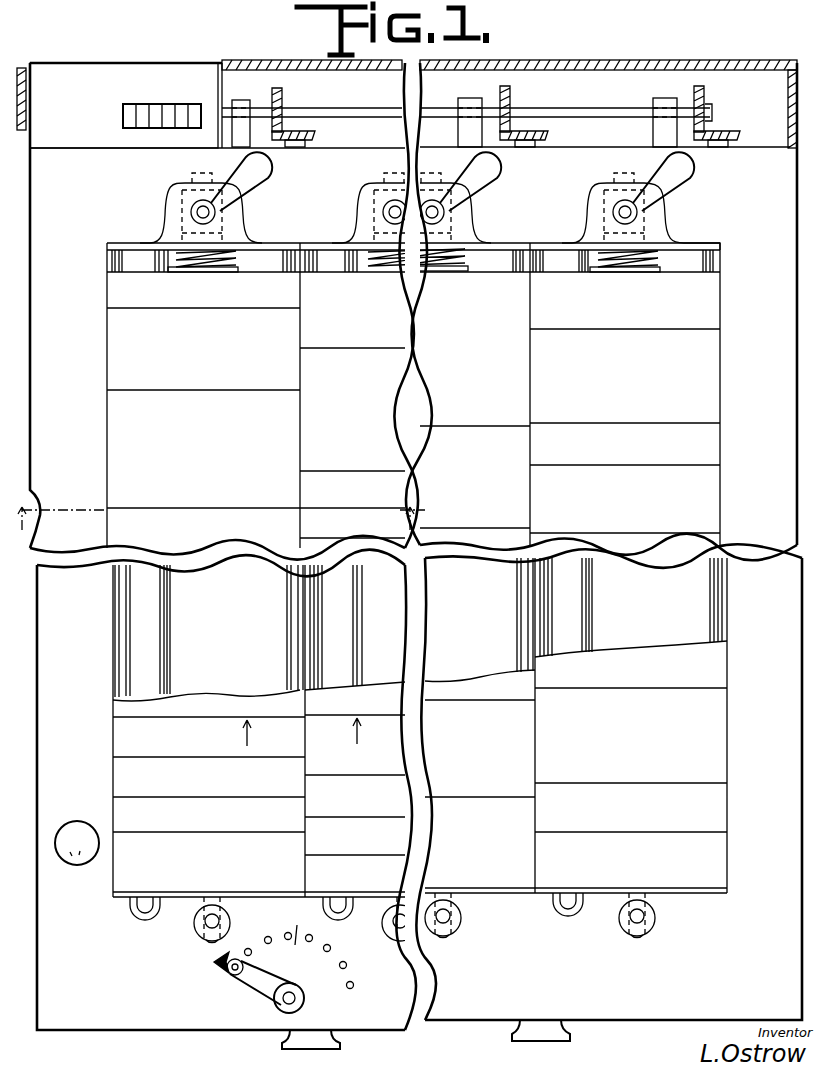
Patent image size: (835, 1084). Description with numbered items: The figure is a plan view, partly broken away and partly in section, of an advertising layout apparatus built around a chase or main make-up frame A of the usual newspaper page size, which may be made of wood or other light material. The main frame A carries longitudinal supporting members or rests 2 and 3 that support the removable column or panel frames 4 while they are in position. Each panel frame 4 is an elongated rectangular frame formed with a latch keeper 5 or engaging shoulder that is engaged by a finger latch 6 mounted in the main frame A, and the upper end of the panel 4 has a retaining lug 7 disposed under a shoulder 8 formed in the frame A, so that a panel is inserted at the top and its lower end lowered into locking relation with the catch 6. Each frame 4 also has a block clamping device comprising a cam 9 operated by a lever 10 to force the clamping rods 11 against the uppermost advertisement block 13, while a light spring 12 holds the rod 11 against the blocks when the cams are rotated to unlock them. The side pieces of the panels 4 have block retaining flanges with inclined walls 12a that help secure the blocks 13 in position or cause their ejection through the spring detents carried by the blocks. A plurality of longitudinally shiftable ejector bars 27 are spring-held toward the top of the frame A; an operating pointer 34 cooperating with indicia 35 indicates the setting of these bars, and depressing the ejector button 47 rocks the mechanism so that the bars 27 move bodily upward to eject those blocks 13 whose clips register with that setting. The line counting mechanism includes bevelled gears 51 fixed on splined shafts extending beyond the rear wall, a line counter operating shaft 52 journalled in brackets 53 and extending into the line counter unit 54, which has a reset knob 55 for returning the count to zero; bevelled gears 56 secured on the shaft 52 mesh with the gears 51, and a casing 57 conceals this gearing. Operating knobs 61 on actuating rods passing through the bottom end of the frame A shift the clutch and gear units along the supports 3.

The longitudinal supporting member 2 is at (130, 265).
The longitudinal supporting member 3 is at (226, 515).
The column panel frame 4 is at (287, 604).
The latch keeper 5 is at (212, 896).
The finger latch 6 is at (199, 920).
The retaining lug 7 is at (194, 176).
The shoulder 8 is at (300, 733).
The cam 9 is at (222, 212).
The lever 10 is at (260, 173).
The clamping rod 11 is at (212, 273).
The light spring 12 is at (232, 265).
The inclined wall 12a is at (313, 250).
The advertisement block 13 is at (298, 410).
The ejector bar 27 is at (157, 275).
The operating pointer 34 is at (258, 995).
The indicia 35 is at (300, 949).
The ejector button 47 is at (63, 862).
The bevelled gear 51 is at (312, 137).
The line counter operating shaft 52 is at (369, 110).
The bracket 53 is at (240, 100).
The line counter unit 54 is at (181, 103).
The reset knob 55 is at (20, 68).
The bevelled gear 56 is at (278, 88).
The casing 57 is at (603, 60).
The operating knob 61 is at (310, 1040).
The main make-up frame A is at (113, 1027).